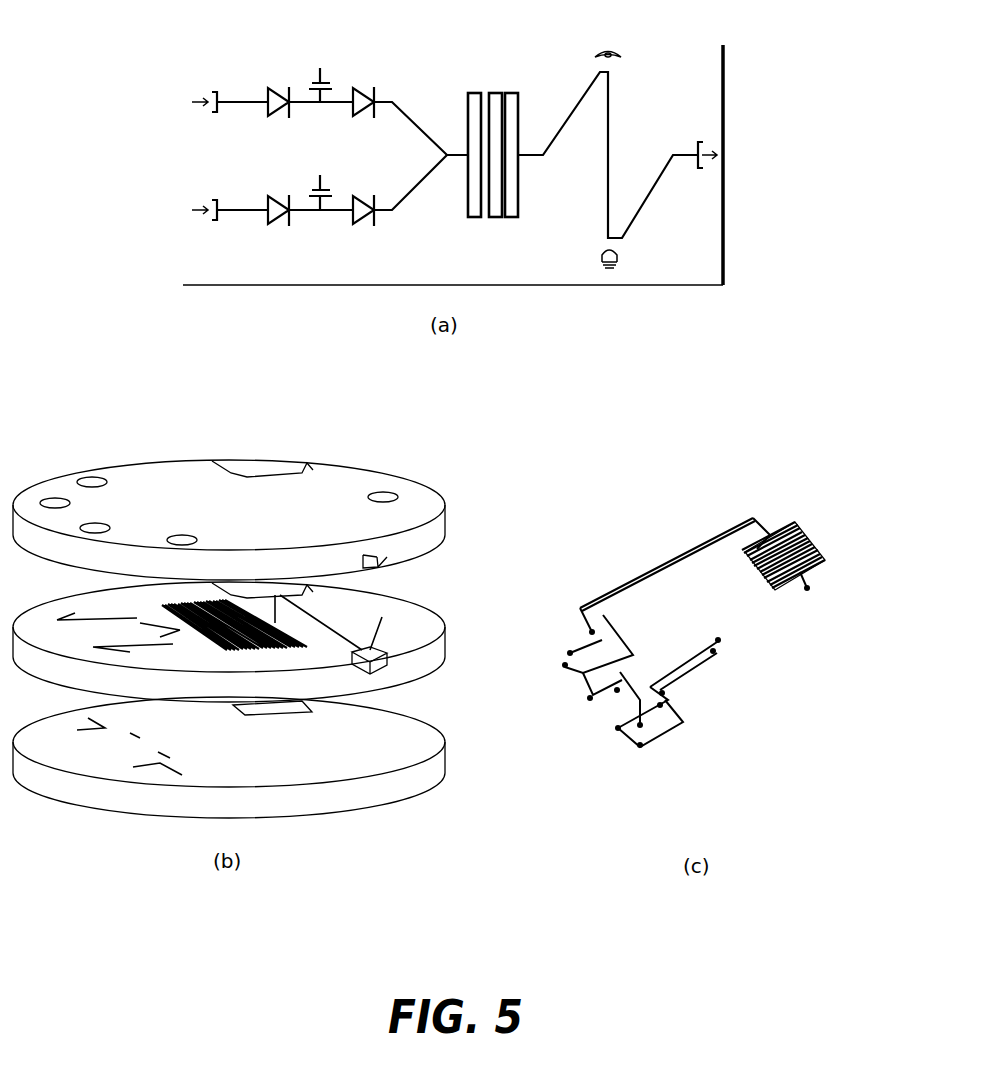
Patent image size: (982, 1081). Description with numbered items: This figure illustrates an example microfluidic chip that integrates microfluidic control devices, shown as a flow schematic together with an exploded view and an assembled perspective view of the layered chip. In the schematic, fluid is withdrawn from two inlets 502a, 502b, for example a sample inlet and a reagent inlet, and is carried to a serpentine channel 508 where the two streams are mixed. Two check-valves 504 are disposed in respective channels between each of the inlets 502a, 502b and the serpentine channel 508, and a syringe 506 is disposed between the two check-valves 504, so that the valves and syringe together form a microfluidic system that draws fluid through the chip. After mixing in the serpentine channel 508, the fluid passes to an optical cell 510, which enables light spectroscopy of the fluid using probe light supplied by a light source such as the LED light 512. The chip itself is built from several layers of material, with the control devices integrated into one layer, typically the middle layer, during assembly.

The inlet 502a is at (214, 91).
The inlet 502b is at (213, 222).
The check-valve 504 is at (350, 197).
The syringe 506 is at (326, 79).
The serpentine channel 508 is at (491, 93).
The optical cell 510 is at (608, 187).
The LED light 512 is at (615, 249).